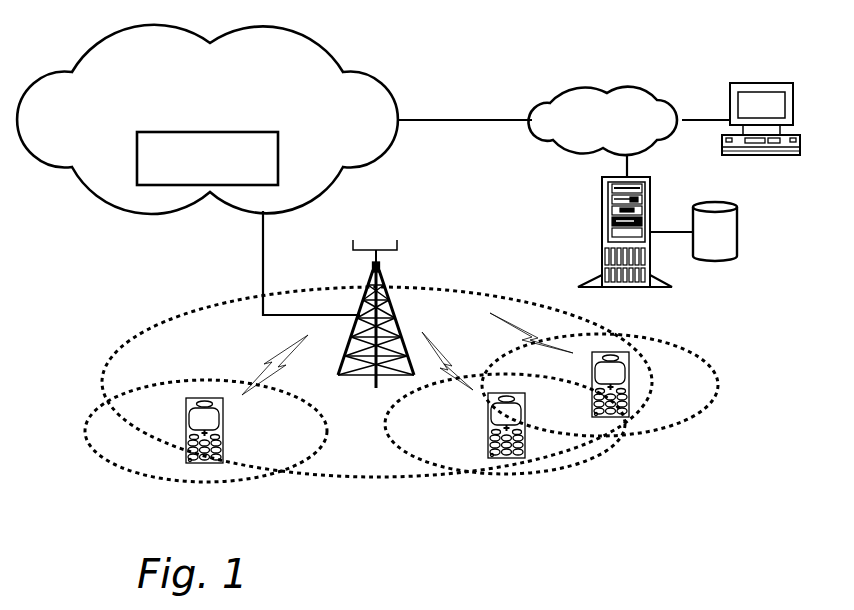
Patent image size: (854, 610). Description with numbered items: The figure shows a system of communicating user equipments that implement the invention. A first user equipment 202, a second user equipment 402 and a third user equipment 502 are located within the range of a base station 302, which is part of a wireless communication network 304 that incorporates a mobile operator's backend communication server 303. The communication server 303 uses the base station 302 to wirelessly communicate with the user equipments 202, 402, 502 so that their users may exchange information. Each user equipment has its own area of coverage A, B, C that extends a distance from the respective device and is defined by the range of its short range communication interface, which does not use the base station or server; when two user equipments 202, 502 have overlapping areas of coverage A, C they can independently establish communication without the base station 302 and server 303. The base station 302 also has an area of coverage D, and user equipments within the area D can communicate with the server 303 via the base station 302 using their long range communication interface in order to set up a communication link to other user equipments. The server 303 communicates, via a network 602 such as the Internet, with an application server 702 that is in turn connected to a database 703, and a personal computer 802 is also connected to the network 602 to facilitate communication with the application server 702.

The wireless communication network 304 is at (207, 119).
The communication server 303 is at (207, 158).
The network 602 is at (602, 121).
The base station 302 is at (390, 307).
The application server 702 is at (602, 228).
The database 703 is at (725, 243).
The personal computer 802 is at (763, 156).
The second user equipment 402 is at (205, 465).
The first user equipment 202 is at (507, 458).
The third user equipment 502 is at (630, 387).
The area of coverage A is at (565, 472).
The area of coverage B is at (117, 467).
The area of coverage C is at (663, 430).
The area of coverage D is at (162, 320).